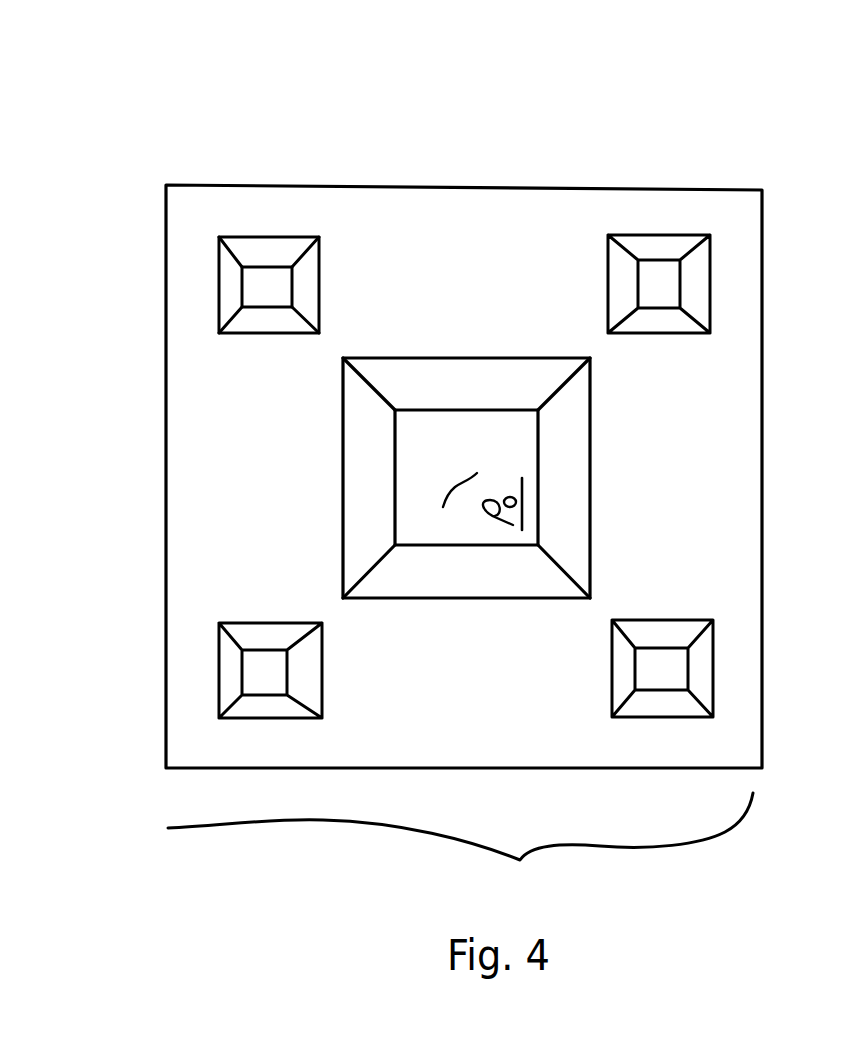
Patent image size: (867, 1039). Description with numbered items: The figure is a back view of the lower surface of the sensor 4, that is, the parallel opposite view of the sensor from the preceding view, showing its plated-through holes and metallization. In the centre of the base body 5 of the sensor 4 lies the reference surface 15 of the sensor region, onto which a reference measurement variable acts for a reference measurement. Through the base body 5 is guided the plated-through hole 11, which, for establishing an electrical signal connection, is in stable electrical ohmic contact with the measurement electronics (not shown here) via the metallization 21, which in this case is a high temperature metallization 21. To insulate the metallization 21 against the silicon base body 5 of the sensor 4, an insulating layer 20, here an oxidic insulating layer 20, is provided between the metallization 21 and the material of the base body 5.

The sensor 4 is at (460, 851).
The base body 5 is at (432, 187).
The plated-through hole 11 is at (267, 278).
The reference surface 15 is at (477, 473).
The insulating layer 20 is at (250, 334).
The metallization 21 is at (232, 278).